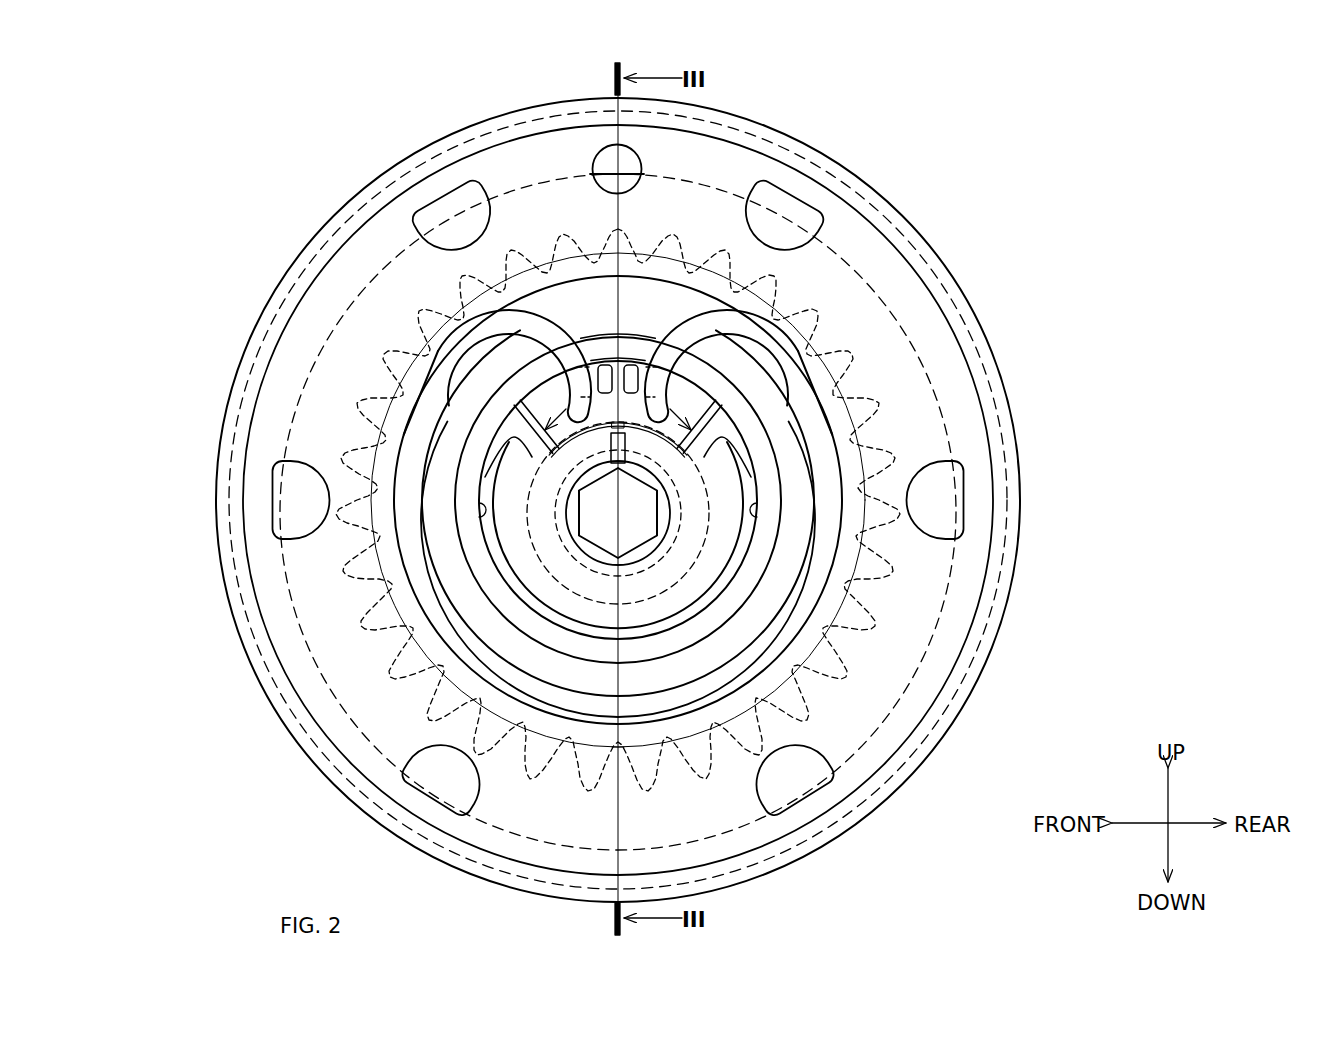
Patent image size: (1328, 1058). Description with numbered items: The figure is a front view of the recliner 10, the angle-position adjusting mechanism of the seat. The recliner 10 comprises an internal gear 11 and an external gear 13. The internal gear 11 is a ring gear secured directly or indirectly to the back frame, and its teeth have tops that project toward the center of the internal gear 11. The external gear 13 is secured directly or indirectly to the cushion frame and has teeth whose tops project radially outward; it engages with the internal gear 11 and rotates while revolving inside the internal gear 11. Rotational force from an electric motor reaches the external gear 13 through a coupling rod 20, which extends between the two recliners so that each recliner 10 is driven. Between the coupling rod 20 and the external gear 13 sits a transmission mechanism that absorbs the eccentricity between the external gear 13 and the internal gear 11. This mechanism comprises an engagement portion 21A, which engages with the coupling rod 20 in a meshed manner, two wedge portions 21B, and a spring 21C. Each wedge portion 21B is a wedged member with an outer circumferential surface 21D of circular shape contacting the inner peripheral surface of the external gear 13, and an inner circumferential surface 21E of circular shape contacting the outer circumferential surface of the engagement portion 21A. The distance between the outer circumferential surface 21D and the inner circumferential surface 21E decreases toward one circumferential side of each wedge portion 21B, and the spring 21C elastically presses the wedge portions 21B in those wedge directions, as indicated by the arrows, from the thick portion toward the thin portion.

The recliner 10 is at (972, 177).
The internal gear 11 is at (908, 393).
The external gear 13 is at (905, 656).
The coupling rod 20 is at (786, 857).
The engagement portion 21A is at (699, 596).
The wedge portions 21B is at (498, 445).
The spring 21C is at (526, 322).
The outer circumferential surface 21D is at (489, 507).
The inner circumferential surface 21E is at (357, 632).